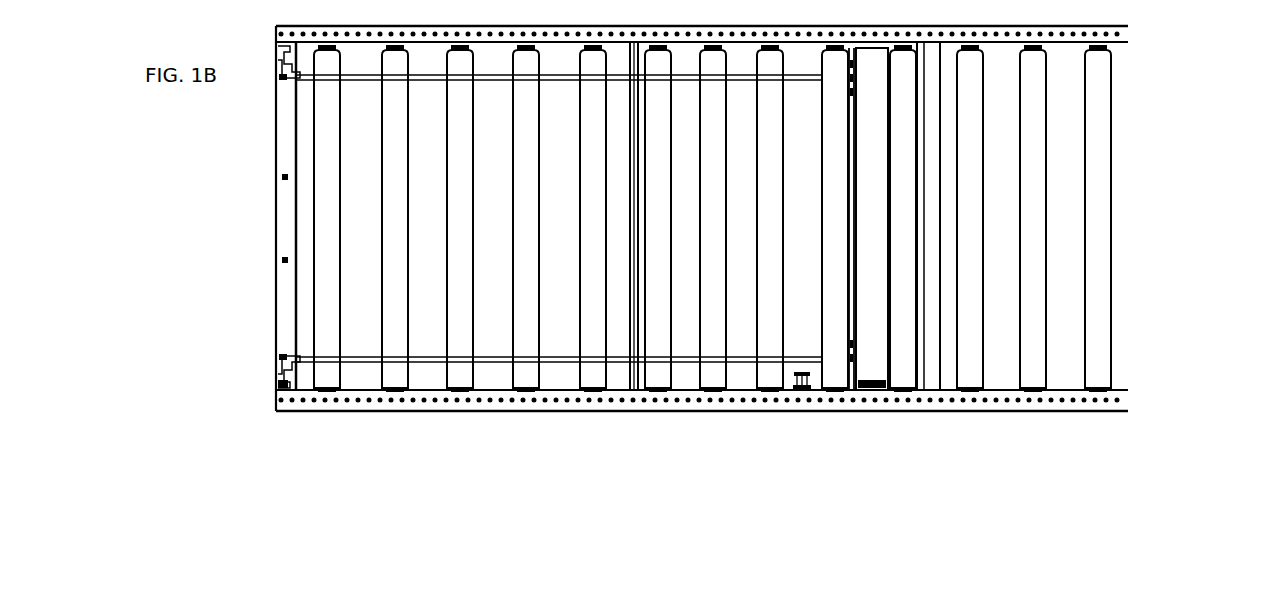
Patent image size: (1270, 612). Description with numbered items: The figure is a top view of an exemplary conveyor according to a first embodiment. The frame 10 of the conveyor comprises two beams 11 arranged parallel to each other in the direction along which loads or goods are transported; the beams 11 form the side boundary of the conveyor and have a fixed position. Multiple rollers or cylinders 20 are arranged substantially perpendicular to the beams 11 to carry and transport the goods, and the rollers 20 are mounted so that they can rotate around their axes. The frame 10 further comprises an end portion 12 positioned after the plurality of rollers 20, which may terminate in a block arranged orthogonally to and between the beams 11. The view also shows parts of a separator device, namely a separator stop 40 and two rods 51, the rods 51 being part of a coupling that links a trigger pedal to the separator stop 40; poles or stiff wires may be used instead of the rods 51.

The frame 10 is at (745, 256).
The beams 11 is at (1129, 27).
The end portion 12 is at (270, 242).
The rollers 20 is at (600, 392).
The separator stop 40 is at (880, 386).
The rods 51 is at (283, 100).